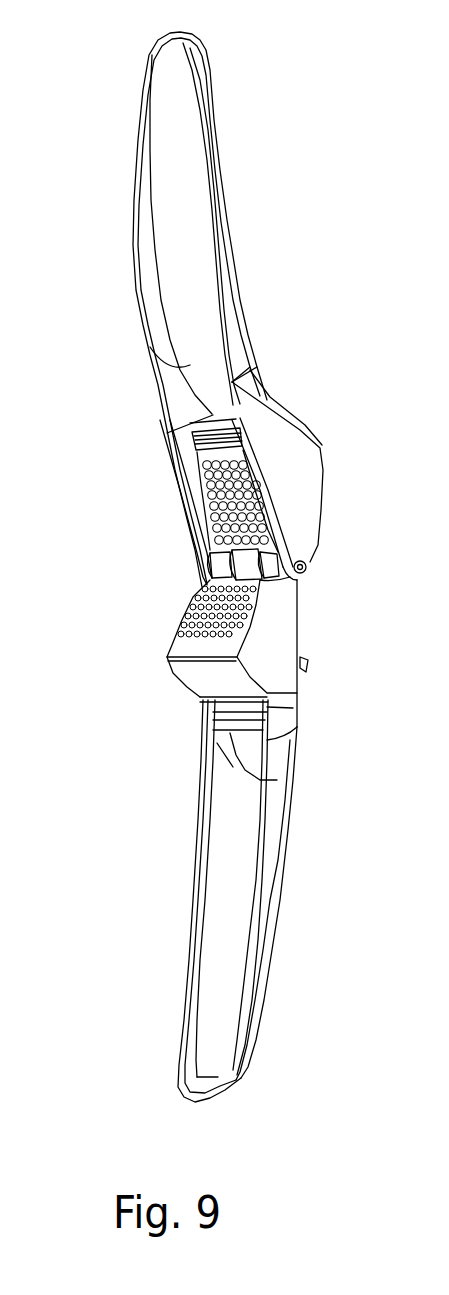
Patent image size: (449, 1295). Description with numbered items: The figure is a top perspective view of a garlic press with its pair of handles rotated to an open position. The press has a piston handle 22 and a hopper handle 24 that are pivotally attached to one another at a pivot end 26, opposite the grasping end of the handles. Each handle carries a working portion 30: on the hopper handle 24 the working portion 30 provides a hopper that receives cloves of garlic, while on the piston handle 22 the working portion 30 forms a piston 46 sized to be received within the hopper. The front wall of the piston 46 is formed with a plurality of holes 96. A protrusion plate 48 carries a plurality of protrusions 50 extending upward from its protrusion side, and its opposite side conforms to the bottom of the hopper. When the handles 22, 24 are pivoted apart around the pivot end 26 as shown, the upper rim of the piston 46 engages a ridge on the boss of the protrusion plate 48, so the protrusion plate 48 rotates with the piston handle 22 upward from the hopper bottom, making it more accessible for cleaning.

The piston handle 22 is at (196, 1040).
The hopper handle 24 is at (148, 162).
The pivot end 26 is at (306, 566).
The working portion 30 is at (180, 477).
The piston 46 is at (265, 637).
The protrusion plate 48 is at (200, 451).
The protrusions 50 is at (215, 508).
The holes 96 is at (190, 608).